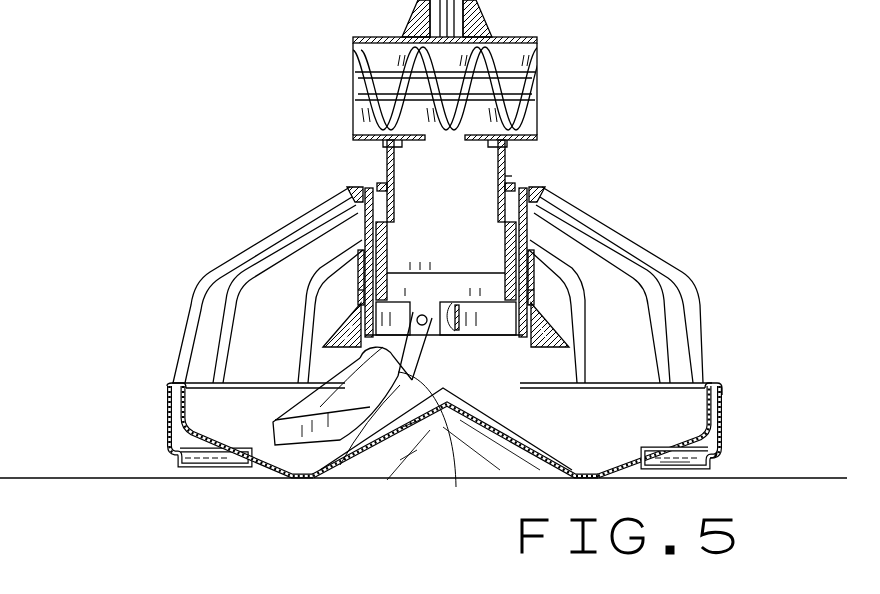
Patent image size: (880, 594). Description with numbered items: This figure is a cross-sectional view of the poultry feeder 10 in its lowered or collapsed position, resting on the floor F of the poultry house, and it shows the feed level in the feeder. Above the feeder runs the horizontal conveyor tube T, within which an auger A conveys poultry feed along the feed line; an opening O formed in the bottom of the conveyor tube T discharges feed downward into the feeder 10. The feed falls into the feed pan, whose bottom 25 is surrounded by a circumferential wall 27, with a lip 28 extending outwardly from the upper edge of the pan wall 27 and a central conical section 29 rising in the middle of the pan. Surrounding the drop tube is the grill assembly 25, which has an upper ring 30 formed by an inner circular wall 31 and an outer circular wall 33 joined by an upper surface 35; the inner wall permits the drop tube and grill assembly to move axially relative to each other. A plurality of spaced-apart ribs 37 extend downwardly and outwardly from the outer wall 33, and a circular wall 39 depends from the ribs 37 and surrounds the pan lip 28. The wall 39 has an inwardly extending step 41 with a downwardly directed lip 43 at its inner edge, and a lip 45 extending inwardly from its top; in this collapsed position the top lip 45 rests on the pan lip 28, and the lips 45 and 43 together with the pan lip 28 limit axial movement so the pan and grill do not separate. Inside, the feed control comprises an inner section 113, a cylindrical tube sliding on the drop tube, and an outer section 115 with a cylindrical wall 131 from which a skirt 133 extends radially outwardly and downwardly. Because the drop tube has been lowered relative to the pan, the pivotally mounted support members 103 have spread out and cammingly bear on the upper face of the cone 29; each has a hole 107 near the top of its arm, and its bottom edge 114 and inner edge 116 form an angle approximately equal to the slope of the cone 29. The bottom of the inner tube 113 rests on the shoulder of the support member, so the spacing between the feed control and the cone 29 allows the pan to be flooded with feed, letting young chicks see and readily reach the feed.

The conveyor tube T is at (518, 42).
The auger A is at (512, 88).
The opening O is at (460, 133).
The poultry feeder 10 is at (628, 208).
The grill assembly 25 is at (262, 448).
The circumferential wall 27 is at (182, 410).
The lip 28 is at (168, 390).
The central conical section 29 is at (386, 445).
The upper ring 30 is at (524, 173).
The inner circular wall 31 is at (386, 150).
The outer circular wall 33 is at (350, 188).
The upper surface 35 is at (378, 185).
The ribs 37 is at (683, 257).
The circular wall 39 is at (722, 402).
The step 41 is at (713, 447).
The lip 43 is at (718, 452).
The lip 45 is at (714, 384).
The support members 103 is at (330, 415).
The hole 107 is at (402, 363).
The inner section 113 is at (350, 356).
The bottom edge 114 is at (297, 450).
The outer section 115 is at (348, 288).
The inner edge 116 is at (455, 402).
The cylindrical wall 131 is at (358, 262).
The skirt 133 is at (345, 333).
The floor F is at (800, 478).